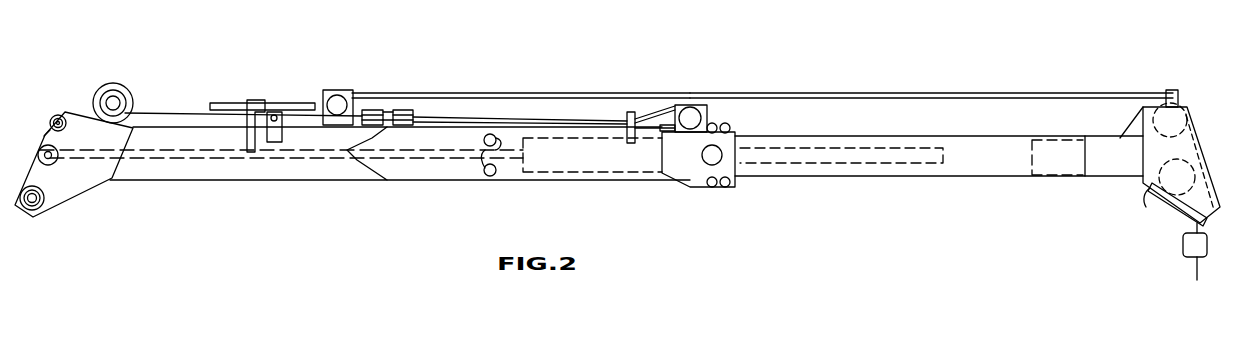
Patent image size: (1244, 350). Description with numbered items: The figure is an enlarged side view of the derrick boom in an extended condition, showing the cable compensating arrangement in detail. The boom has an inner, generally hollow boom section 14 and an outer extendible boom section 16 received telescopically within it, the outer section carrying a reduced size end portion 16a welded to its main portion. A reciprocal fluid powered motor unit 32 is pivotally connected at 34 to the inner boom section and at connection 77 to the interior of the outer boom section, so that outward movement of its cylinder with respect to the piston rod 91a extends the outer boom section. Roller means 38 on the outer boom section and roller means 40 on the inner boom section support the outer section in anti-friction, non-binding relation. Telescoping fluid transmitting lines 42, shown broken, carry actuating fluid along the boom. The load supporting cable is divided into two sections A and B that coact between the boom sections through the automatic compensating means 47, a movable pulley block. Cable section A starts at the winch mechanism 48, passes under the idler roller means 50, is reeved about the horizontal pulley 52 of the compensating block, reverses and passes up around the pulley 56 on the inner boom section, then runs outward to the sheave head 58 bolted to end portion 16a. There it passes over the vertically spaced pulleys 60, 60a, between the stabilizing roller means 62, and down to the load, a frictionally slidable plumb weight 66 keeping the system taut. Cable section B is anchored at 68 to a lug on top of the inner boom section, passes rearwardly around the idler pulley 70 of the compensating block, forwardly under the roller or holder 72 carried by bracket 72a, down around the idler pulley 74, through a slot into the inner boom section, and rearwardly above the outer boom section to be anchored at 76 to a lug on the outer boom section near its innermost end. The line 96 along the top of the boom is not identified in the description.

The inner boom section 14 is at (345, 170).
The outer boom section 16 is at (987, 167).
The reduced size end portion 16a is at (1100, 168).
The reciprocal fluid powered motor unit 32 is at (845, 156).
The pivotal connection 34 is at (34, 150).
The roller means 38 is at (490, 176).
The roller means 40 is at (730, 126).
The telescoping fluid transmitting lines 42 is at (256, 103).
The automatic compensating means 47 is at (430, 110).
The winch mechanism 48 is at (133, 100).
The idler roller means 50 is at (282, 112).
The rotatable generally horizontal pulley 52 is at (372, 111).
The pulley 56 is at (336, 98).
The sheave head 58 is at (1210, 142).
The rotatable pulley 60 is at (1178, 100).
The rotatable pulley 60a is at (1210, 200).
The stabilizing roller means 62 is at (1172, 219).
The plumb weight 66 is at (1206, 245).
The anchor 68 is at (655, 112).
The idler pulley 70 is at (428, 112).
The roller or holder 72 is at (632, 110).
The bracket 72a is at (632, 145).
The idler pulley 74 is at (705, 103).
The anchor 76 is at (610, 108).
The pivotal connection 77 is at (692, 163).
The piston rod 91a is at (187, 157).
The cable 96 is at (828, 94).
The cable section A is at (748, 96).
The cable section B is at (563, 117).